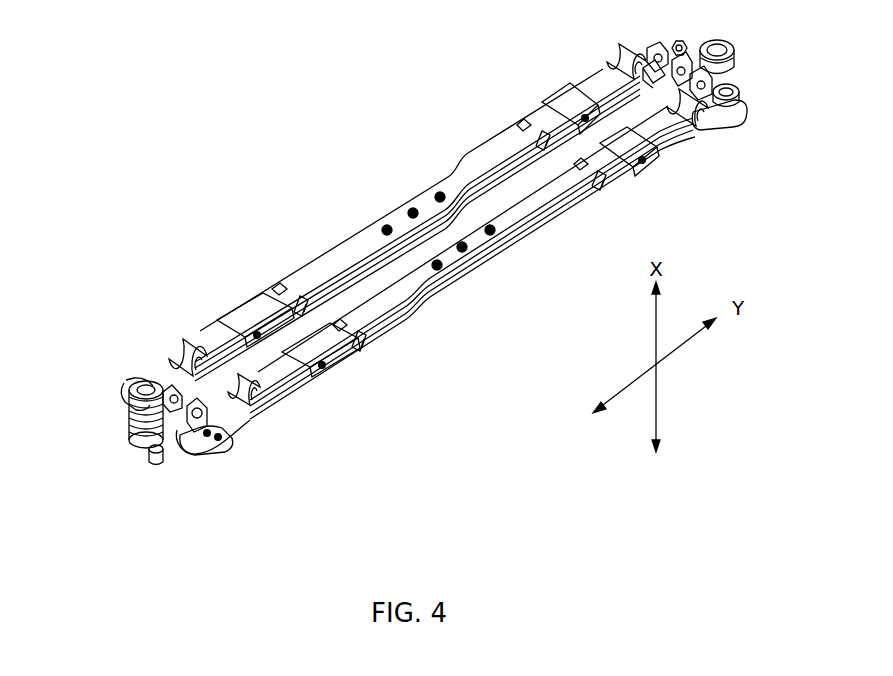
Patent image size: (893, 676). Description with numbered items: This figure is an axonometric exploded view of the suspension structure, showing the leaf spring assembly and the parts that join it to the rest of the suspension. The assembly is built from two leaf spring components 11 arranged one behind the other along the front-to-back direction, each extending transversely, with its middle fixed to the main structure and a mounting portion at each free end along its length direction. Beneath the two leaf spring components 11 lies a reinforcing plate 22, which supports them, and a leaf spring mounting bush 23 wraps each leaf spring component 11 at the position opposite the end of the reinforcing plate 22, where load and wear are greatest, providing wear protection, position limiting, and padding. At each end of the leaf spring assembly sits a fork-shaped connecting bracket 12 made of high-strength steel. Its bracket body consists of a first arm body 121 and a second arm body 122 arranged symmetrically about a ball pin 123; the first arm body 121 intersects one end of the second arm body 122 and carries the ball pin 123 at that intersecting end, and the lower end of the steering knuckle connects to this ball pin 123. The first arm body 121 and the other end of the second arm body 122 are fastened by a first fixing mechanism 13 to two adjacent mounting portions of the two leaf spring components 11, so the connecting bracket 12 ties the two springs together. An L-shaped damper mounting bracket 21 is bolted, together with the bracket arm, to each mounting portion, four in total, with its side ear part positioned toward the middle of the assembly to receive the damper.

The leaf spring component 11 is at (332, 258).
The connecting bracket 12 is at (391, 281).
The first arm body 121 is at (137, 425).
The second arm body 122 is at (172, 442).
The ball pin 123 is at (147, 457).
The first fixing mechanism 13 is at (150, 377).
The damper mounting bracket 21 is at (162, 378).
The reinforcing plate 22 is at (461, 215).
The leaf spring mounting bush 23 is at (236, 303).